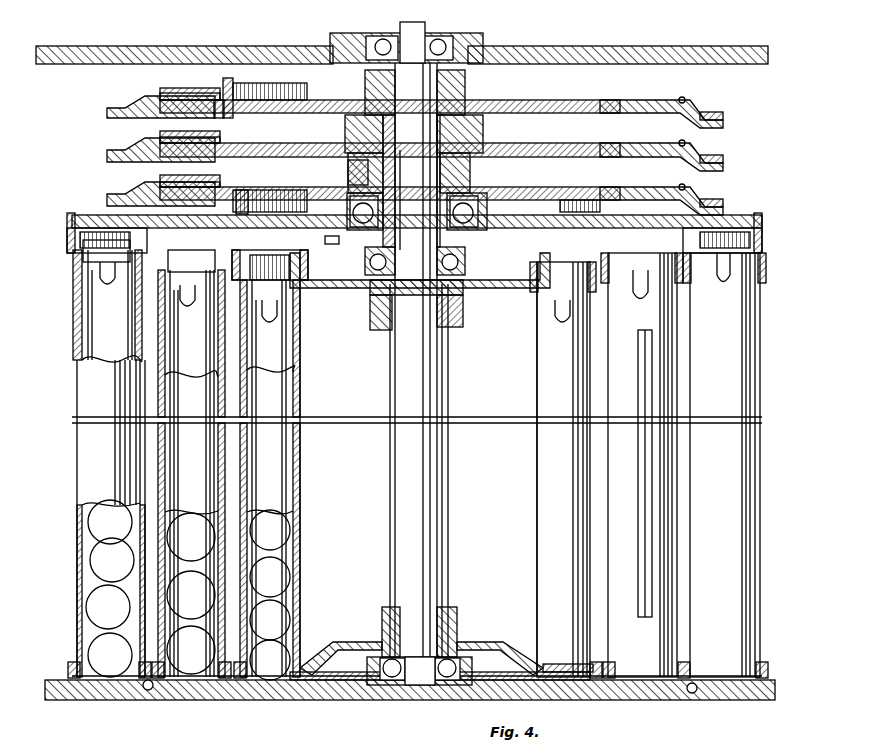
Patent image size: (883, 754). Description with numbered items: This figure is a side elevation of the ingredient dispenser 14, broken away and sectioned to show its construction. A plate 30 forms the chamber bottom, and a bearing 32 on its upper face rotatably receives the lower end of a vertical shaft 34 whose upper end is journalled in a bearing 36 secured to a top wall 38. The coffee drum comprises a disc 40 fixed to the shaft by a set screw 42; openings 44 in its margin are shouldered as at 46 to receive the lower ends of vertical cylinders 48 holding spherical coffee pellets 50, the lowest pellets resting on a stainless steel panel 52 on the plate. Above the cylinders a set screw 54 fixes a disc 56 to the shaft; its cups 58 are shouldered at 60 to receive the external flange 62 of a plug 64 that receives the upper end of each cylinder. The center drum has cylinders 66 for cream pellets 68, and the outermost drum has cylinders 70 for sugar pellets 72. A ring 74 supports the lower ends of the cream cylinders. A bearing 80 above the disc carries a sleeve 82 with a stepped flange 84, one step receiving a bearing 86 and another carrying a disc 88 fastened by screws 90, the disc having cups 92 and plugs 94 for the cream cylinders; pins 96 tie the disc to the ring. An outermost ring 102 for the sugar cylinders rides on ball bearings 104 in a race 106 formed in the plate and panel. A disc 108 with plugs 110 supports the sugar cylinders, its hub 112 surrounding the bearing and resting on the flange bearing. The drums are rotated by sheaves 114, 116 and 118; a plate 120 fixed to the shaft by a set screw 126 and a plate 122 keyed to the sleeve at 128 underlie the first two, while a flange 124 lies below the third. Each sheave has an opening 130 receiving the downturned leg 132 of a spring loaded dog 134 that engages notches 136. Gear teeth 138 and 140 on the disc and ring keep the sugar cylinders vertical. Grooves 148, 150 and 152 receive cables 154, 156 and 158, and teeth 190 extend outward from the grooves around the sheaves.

The chamber 14 is at (337, 376).
The plate 30 is at (738, 690).
The bearing 32 is at (450, 690).
The vertical shaft 34 is at (438, 516).
The bearing 36 is at (462, 36).
The top wall 38 is at (522, 50).
The disc 40 is at (343, 648).
The set screw 42 is at (457, 622).
The openings 44 is at (585, 695).
The shoulder 46 is at (547, 665).
The cylinders 48 is at (294, 475).
The pellets 50 is at (300, 561).
The stainless steel panel 52 is at (280, 690).
The set screw 54 is at (463, 311).
The disc 56 is at (370, 292).
The cups 58 is at (545, 292).
The shoulder 60 is at (250, 264).
The external flange 62 is at (564, 310).
The plug 64 is at (292, 306).
The cylinders 66 is at (612, 384).
The cream pellets 68 is at (177, 506).
The cylinders 70 is at (80, 491).
The sugar pellets 72 is at (86, 566).
The ring 74 is at (218, 690).
The bearing 80 is at (390, 248).
The sleeve 82 is at (390, 216).
The flange 84 is at (355, 287).
The bearing 86 is at (390, 198).
The disc 88 is at (246, 210).
The screws 90 is at (326, 240).
The cups 92 is at (146, 280).
The plugs 94 is at (176, 290).
The pins 96 is at (648, 612).
The ring 102 is at (156, 665).
The ball bearings 104 is at (700, 674).
The race 106 is at (140, 690).
The disc 108 is at (150, 200).
The plugs 110 is at (86, 216).
The hub 112 is at (362, 176).
The sheave 114 is at (628, 100).
The sheave 116 is at (628, 145).
The sheave 118 is at (638, 190).
The plate 120 is at (556, 100).
The plate 122 is at (556, 145).
The flange 124 is at (552, 195).
The set screw 126 is at (468, 79).
The key 128 is at (373, 166).
The opening 130 is at (168, 96).
The downturned leg 132 is at (230, 118).
The spring loaded dog 134 is at (236, 74).
The notches 136 is at (252, 92).
The gear teeth 138 is at (68, 236).
The gear teeth 140 is at (68, 670).
The groove 148 is at (695, 110).
The groove 150 is at (700, 153).
The groove 152 is at (702, 197).
The cable 154 is at (680, 97).
The cable 156 is at (681, 142).
The cable 158 is at (689, 187).
The teeth 190 is at (118, 112).